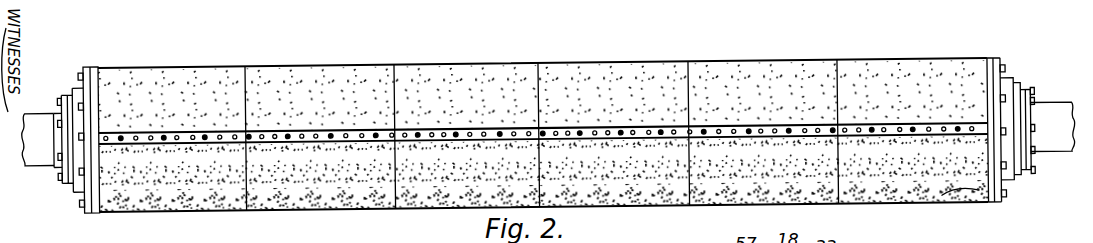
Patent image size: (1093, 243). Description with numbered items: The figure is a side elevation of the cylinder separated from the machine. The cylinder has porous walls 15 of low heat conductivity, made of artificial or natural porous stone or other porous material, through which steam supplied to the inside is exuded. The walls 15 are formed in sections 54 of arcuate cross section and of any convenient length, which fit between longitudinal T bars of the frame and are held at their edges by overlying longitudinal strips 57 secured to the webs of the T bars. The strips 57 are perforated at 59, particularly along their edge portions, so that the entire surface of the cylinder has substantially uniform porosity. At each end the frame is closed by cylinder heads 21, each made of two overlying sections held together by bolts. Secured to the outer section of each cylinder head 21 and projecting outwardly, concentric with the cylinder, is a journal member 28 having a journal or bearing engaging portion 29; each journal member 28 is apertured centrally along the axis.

The porous walls 15 is at (183, 76).
The cylinder heads 21 is at (69, 96).
The journal member 28 is at (57, 166).
The journal or bearing engaging portion 29 is at (33, 116).
The sections 54 is at (193, 211).
The longitudinal strips 57 is at (620, 128).
The perforations 59 is at (302, 133).